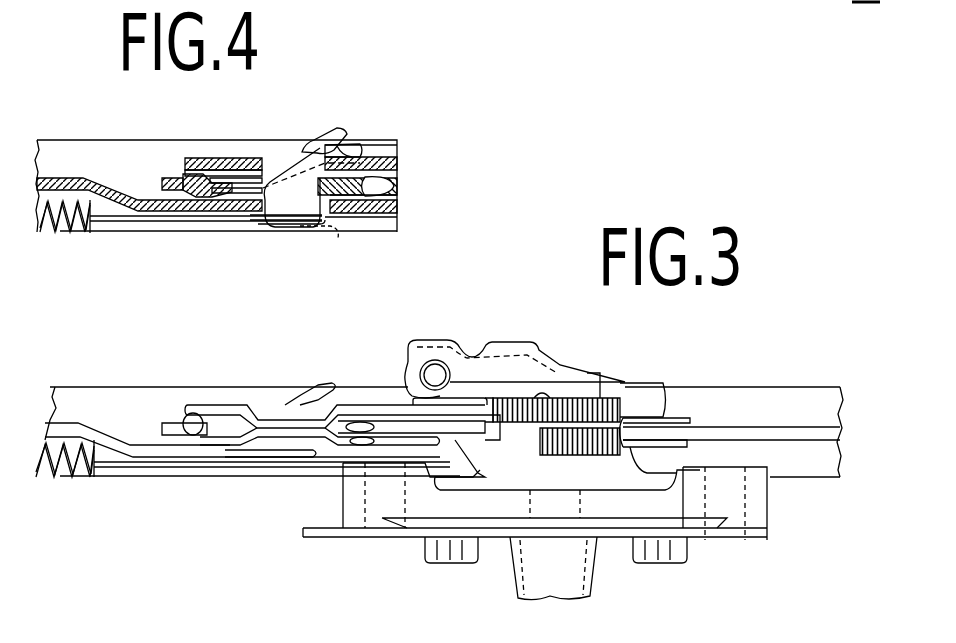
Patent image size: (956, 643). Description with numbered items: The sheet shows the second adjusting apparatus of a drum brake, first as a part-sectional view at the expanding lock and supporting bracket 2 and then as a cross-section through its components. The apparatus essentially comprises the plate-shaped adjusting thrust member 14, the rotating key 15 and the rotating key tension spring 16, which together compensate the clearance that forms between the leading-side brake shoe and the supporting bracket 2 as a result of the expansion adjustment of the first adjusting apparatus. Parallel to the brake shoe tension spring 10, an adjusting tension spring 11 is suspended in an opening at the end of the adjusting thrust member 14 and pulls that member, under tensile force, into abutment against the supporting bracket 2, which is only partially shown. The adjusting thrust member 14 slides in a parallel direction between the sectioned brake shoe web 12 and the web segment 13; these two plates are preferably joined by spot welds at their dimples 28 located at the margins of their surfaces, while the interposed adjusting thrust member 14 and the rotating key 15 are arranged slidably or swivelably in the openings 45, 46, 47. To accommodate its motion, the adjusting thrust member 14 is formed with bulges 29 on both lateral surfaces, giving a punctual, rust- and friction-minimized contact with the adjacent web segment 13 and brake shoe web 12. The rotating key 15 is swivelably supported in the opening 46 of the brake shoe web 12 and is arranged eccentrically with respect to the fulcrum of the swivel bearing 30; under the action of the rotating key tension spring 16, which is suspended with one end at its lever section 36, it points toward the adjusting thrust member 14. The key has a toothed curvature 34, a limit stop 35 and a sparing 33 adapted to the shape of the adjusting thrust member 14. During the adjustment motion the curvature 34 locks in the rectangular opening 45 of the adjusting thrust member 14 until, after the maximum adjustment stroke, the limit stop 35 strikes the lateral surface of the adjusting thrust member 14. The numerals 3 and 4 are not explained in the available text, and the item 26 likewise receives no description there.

In FIG. 3, the supporting bracket 2 is at (512, 472).
In FIG. 3, the lever 3 is at (512, 338).
In FIG. 3, the plate 4 is at (765, 425).
In FIG. 3, the brake shoe tension spring 10 is at (598, 395).
In FIG. 3, the adjusting tension spring 11 is at (592, 470).
In FIG. 4, the brake shoe web 12 is at (98, 187).
In FIG. 3, the brake shoe web 12 is at (132, 462).
In FIG. 4, the web segment 13 is at (222, 158).
In FIG. 3, the web segment 13 is at (252, 403).
In FIG. 4, the adjusting thrust member 14 is at (400, 185).
In FIG. 3, the adjusting thrust member 14 is at (398, 420).
In FIG. 4, the rotating key 15 is at (345, 128).
In FIG. 3, the rotating key 15 is at (320, 380).
In FIG. 4, the rotating key tension spring 16 is at (62, 228).
In FIG. 3, the rotating key tension spring 16 is at (63, 478).
In FIG. 4, the body 26 is at (79, 150).
In FIG. 3, the body 26 is at (88, 400).
In FIG. 3, the dimples 28 is at (264, 440).
In FIG. 4, the bulges 29 is at (178, 176).
In FIG. 3, the bulges 29 is at (184, 437).
In FIG. 4, the swivel bearing 30 is at (262, 226).
In FIG. 4, the sparing 33 is at (380, 205).
In FIG. 4, the curvature 34 is at (314, 140).
In FIG. 4, the limit stop 35 is at (356, 143).
In FIG. 4, the lever section 36 is at (306, 238).
In FIG. 4, the rectangular opening 45 is at (236, 222).
In FIG. 4, the opening 46 is at (270, 160).
In FIG. 4, the opening 47 is at (342, 218).